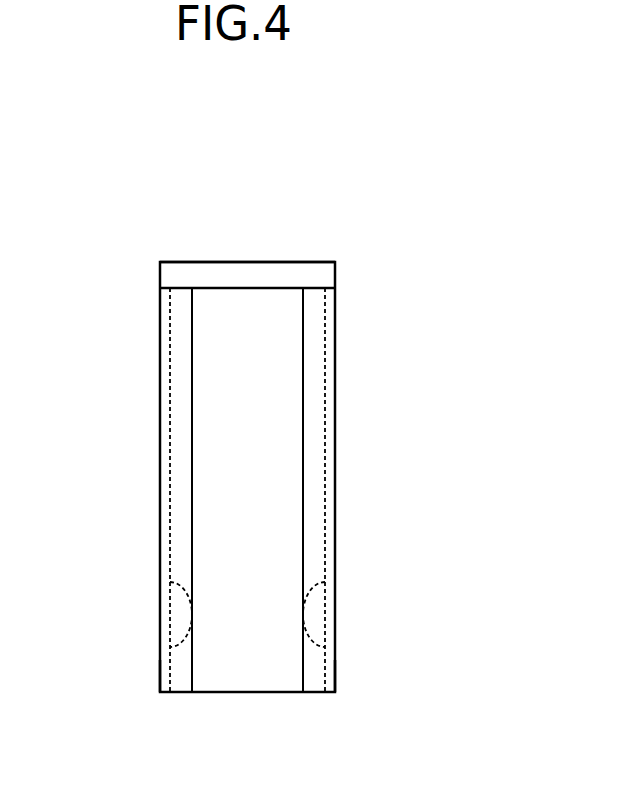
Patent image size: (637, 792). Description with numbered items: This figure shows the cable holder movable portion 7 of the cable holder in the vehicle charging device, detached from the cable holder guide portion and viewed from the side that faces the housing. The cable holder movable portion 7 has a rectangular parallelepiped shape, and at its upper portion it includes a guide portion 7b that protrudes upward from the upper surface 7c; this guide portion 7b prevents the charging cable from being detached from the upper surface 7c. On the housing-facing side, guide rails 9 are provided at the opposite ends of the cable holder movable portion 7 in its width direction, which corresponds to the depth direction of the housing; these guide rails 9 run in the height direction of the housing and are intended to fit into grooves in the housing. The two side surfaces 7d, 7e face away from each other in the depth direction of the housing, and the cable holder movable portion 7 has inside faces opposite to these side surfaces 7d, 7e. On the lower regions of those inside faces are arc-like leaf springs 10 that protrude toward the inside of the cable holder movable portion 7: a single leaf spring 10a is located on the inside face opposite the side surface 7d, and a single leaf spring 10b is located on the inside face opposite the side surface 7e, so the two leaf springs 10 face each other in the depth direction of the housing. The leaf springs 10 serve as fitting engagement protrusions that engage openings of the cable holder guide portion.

The cable holder movable portion 7 is at (269, 414).
The guide portion 7b is at (213, 275).
The upper surface 7c is at (288, 287).
The side surface 7d is at (335, 680).
The side surface 7e is at (160, 680).
The guide rails 9 is at (182, 455).
The leaf springs 10 is at (269, 584).
The leaf spring 10a is at (313, 585).
The leaf spring 10b is at (172, 582).